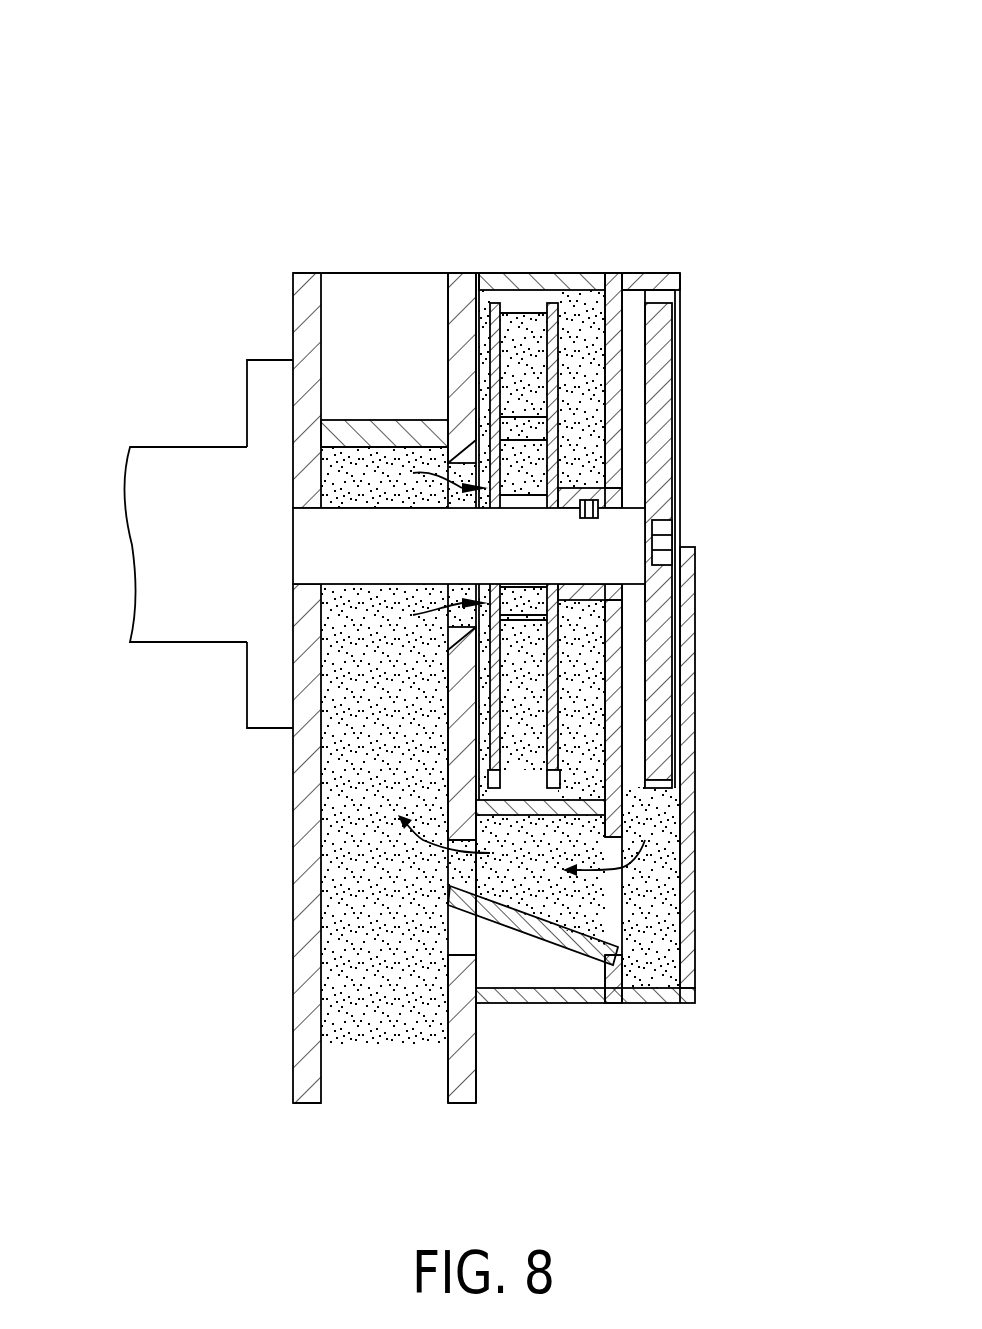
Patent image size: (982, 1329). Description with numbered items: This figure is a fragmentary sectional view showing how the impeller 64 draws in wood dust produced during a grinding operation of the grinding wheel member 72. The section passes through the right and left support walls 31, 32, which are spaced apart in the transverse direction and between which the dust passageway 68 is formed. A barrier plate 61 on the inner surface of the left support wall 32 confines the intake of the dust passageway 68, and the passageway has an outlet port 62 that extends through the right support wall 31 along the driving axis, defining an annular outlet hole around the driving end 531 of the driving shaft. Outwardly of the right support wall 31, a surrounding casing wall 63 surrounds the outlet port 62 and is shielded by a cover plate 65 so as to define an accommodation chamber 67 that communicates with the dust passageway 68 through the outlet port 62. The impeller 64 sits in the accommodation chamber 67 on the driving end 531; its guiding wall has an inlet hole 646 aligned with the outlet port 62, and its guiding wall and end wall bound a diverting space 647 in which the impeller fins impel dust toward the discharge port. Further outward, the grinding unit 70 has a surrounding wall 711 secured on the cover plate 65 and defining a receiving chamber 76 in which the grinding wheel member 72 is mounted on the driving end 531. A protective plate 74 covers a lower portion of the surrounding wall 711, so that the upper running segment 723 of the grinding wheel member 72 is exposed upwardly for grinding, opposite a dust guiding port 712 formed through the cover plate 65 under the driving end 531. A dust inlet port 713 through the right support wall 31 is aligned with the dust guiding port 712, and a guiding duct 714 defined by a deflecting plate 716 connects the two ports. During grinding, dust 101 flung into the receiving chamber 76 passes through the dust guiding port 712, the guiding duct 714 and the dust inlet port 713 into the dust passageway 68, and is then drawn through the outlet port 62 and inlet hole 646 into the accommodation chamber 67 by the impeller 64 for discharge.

The right support wall 31 is at (458, 292).
The left support wall 32 is at (303, 293).
The barrier plate 61 is at (360, 430).
The outlet port 62 is at (452, 478).
The surrounding casing wall 63 is at (505, 300).
The impeller 64 is at (533, 350).
The cover plate 65 is at (598, 297).
The accommodation chamber 67 is at (575, 305).
The dust passageway 68 is at (343, 805).
The grinding unit 70 is at (672, 262).
The grinding wheel member 72 is at (675, 295).
The protective plate 74 is at (695, 750).
The receiving chamber 76 is at (663, 897).
The dust 101 is at (520, 868).
The driving end 531 is at (315, 557).
The inlet hole 646 is at (490, 460).
The diverting space 647 is at (547, 303).
The surrounding wall 711 is at (640, 277).
The dust guiding port 712 is at (613, 925).
The dust inlet port 713 is at (458, 932).
The guiding duct 714 is at (560, 903).
The deflecting plate 716 is at (594, 935).
The upper running segment 723 is at (662, 358).